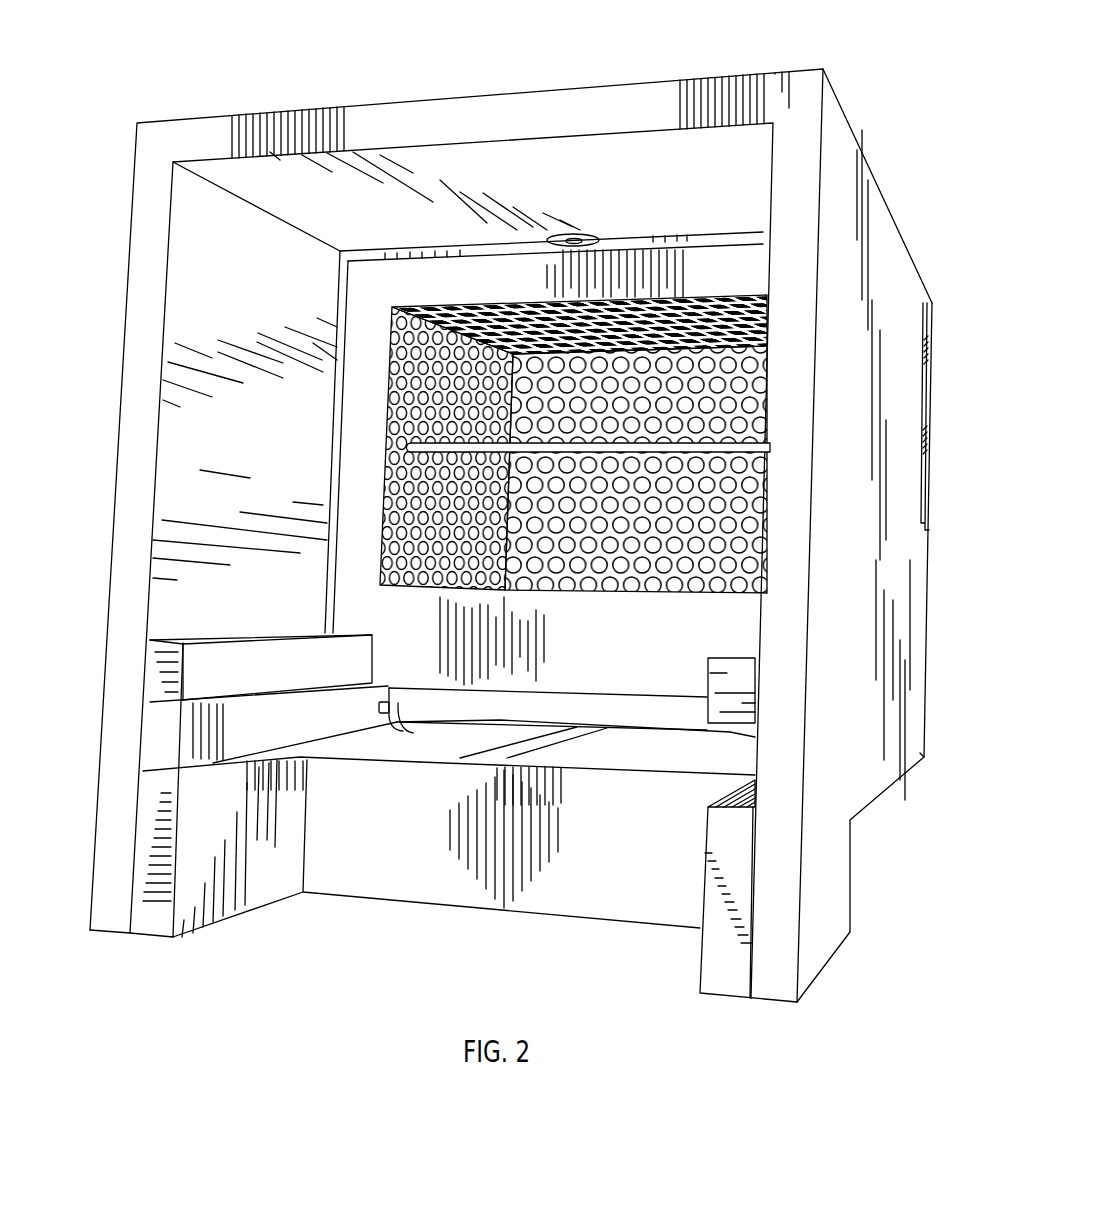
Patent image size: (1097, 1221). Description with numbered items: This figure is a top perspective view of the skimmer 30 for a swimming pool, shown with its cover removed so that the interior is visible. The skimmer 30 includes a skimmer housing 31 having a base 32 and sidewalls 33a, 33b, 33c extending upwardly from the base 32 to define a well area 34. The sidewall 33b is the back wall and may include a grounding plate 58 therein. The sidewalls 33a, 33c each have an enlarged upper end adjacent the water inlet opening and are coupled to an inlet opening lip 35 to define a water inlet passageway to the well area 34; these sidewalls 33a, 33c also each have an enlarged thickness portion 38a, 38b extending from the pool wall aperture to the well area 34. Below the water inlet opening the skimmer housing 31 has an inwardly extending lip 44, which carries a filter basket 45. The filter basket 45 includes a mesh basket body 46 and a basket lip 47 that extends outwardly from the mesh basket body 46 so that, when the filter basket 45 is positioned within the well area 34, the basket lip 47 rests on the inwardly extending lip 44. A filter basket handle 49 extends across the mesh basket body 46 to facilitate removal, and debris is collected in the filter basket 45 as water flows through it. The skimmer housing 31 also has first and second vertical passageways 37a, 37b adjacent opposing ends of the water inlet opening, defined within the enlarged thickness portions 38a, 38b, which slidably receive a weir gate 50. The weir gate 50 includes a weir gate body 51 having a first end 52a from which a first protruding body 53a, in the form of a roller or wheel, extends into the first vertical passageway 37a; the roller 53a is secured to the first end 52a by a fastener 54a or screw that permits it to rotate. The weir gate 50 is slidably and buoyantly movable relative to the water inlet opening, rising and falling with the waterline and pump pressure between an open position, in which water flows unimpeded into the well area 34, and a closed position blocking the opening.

The skimmer 30 is at (186, 79).
The skimmer housing 31 is at (127, 271).
The base 32 is at (922, 572).
The sidewall 33a is at (130, 388).
The sidewall (back wall) 33b is at (573, 107).
The sidewall 33c is at (850, 422).
The well area 34 is at (277, 323).
The inlet opening lip 35 is at (418, 858).
The first vertical passageway 37a is at (160, 728).
The second vertical passageway 37b is at (727, 757).
The enlarged thickness portion 38a is at (175, 653).
The enlarged thickness portion 38b is at (740, 673).
The inwardly extending lip 44 is at (333, 493).
The filter basket 45 is at (358, 413).
The mesh basket body 46 is at (713, 352).
The basket lip 47 is at (377, 285).
The filter basket handle 49 is at (718, 447).
The weir gate 50 is at (580, 737).
The weir gate body 51 is at (500, 710).
The first end 52a is at (413, 735).
The first protruding body (roller) 53a is at (380, 727).
The fastener 54a is at (379, 707).
The grounding plate 58 is at (566, 235).